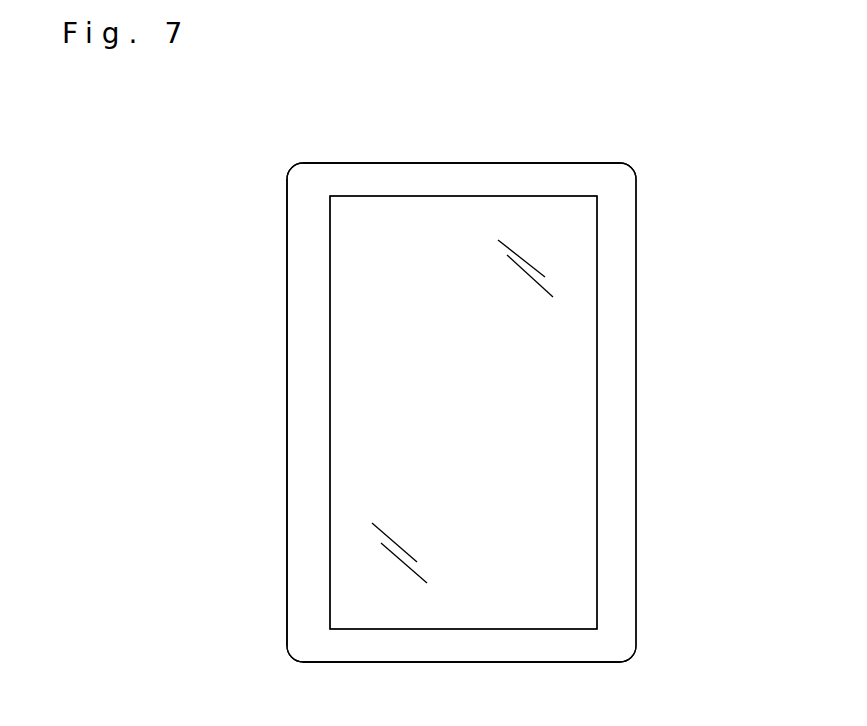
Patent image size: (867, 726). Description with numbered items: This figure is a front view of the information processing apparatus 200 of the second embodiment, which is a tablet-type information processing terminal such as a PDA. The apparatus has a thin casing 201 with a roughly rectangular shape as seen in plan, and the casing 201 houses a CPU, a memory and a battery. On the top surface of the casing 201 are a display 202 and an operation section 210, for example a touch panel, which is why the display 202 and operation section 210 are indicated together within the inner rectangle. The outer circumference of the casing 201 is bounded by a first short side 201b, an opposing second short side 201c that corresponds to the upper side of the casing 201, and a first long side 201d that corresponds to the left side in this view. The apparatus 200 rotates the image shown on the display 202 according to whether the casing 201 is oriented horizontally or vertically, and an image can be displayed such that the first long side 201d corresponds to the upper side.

The information processing apparatus 200 is at (387, 142).
The casing 201 is at (636, 300).
The first short side 201b is at (530, 662).
The second short side 201c is at (532, 163).
The first long side 201d is at (287, 480).
The display 202 is at (562, 470).
The operation section 210 is at (463, 412).